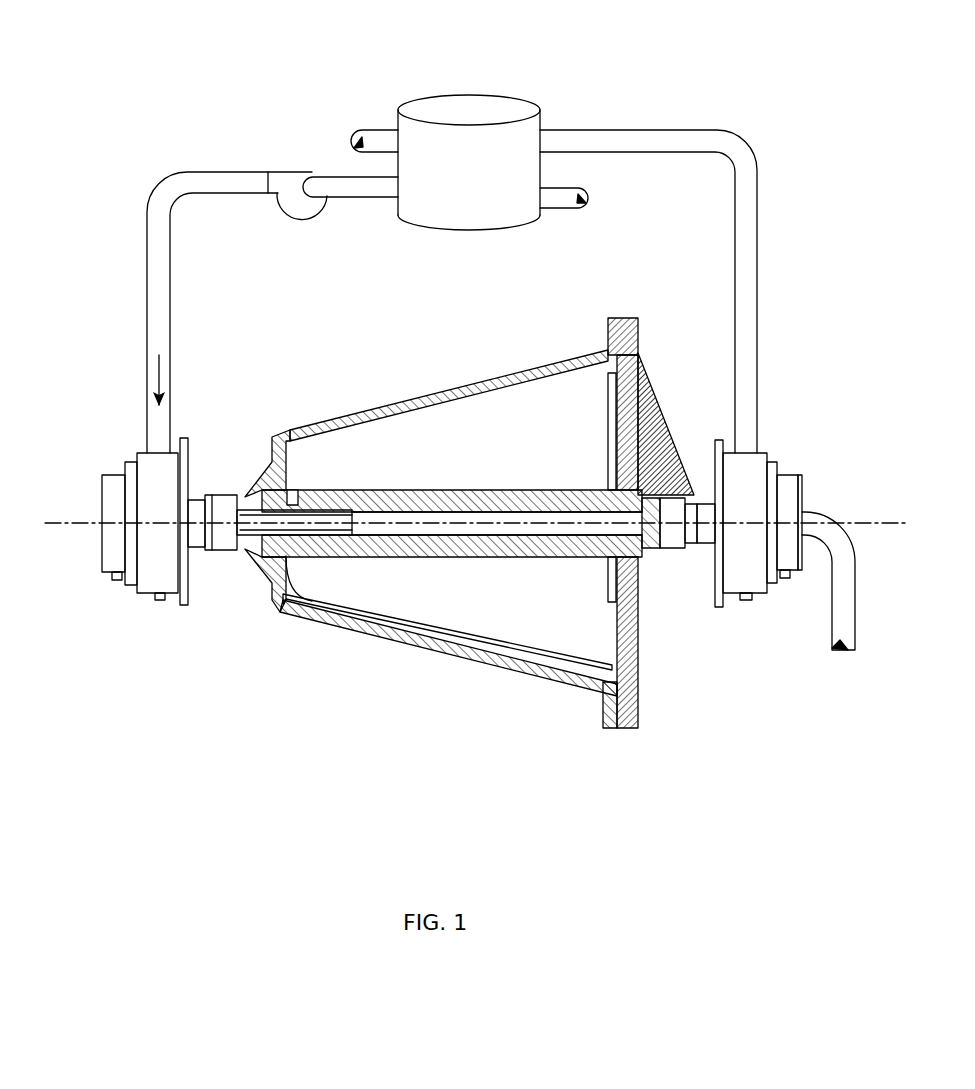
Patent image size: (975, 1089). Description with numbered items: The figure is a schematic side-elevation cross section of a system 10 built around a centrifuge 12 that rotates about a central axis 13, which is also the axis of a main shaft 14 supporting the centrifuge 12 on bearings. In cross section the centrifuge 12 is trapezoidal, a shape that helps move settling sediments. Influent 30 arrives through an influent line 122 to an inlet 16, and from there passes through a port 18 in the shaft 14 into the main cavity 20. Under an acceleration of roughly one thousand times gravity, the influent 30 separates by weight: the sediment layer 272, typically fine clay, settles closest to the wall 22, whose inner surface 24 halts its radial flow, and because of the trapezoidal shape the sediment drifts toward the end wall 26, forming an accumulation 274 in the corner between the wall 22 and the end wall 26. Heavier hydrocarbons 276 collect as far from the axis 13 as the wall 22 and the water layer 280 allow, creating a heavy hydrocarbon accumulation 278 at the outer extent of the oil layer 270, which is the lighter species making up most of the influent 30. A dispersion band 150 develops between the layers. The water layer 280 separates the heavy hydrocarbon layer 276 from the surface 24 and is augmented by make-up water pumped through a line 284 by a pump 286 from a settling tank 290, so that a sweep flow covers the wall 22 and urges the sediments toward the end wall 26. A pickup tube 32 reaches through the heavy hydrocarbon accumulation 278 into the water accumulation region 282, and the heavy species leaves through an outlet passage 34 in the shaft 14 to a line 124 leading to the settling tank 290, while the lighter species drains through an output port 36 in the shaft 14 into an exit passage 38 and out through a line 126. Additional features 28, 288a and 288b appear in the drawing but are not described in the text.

The system 10 is at (133, 52).
The centrifuge 12 is at (414, 563).
The central axis 13 is at (70, 527).
The main shaft 14 is at (448, 486).
The inlet 16 is at (237, 548).
The port 18 is at (296, 490).
The main cavity 20 is at (543, 418).
The wall 22 is at (365, 632).
The inner surface 24 is at (420, 408).
The end wall 26 is at (638, 704).
The end wall 28 is at (292, 466).
The influent 30 is at (165, 381).
The pickup tube 32 is at (638, 628).
The outlet passage 34 is at (648, 515).
The output port 36 is at (609, 490).
The exit passage 38 is at (633, 707).
The influent line 122 is at (165, 296).
The heavy species line 124 is at (648, 134).
The light species line 126 is at (838, 622).
The dispersion band 150 is at (297, 598).
The oil layer 270 is at (446, 688).
The sediment layer 272 is at (403, 640).
The sediment accumulation 274 is at (600, 700).
The heavier hydrocarbons 276 is at (384, 616).
The heavy hydrocarbon accumulation 278 is at (597, 662).
The water layer 280 is at (497, 653).
The water accumulation region 282 is at (577, 676).
The line 284 is at (219, 178).
The pump 286 is at (288, 183).
The settler tank inlet 288a is at (366, 135).
The settler tank outlet 288b is at (570, 205).
The settling tank 290 is at (469, 162).